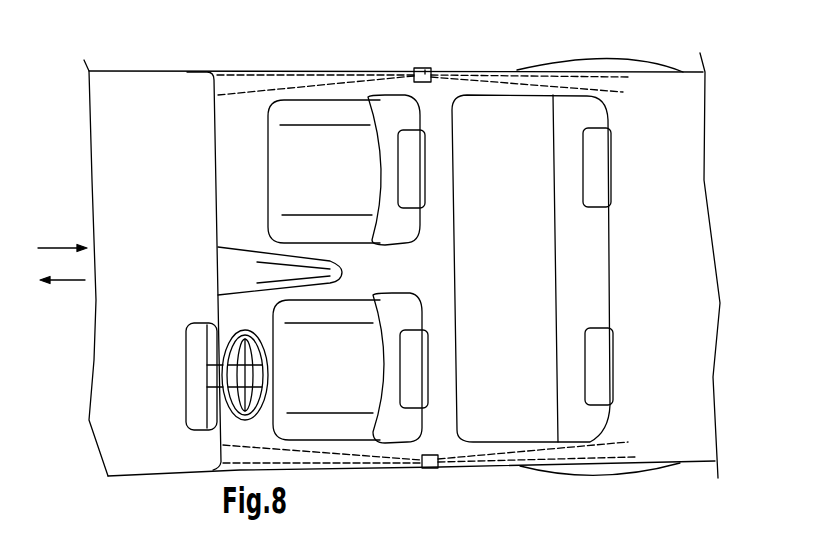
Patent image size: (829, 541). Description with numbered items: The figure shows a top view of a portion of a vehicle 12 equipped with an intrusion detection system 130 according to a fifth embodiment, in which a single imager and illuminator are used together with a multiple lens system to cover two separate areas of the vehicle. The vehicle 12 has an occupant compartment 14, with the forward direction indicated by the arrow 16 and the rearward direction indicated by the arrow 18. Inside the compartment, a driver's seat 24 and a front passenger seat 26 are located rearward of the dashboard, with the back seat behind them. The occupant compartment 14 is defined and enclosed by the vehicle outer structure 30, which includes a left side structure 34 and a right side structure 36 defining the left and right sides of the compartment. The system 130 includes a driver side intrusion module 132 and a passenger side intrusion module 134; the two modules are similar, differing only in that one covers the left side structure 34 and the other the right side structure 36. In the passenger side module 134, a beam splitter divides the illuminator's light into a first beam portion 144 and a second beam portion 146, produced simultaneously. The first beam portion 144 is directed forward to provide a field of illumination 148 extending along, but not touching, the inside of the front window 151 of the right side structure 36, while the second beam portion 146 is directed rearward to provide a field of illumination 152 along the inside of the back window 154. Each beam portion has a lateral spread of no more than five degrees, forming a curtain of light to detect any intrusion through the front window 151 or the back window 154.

The vehicle 12 is at (75, 354).
The vehicle occupant compartment 14 is at (402, 280).
The arrow indicating forward direction 16 is at (72, 281).
The arrow indicating rearward direction 18 is at (50, 247).
The driver's seat 24 is at (397, 377).
The front passenger seat 26 is at (408, 222).
The outer structure 30 is at (705, 187).
The left side structure 34 is at (503, 467).
The right side structure 36 is at (670, 67).
The intrusion detection system 130 is at (98, 54).
The driver side intrusion module 132 is at (433, 468).
The passenger side intrusion module 134 is at (422, 67).
The first beam portion 144 is at (277, 73).
The second beam portion 146 is at (502, 75).
The field of illumination 148 is at (317, 80).
The front window 151 is at (242, 69).
The field of illumination 152 is at (543, 80).
The back window 154 is at (477, 68).